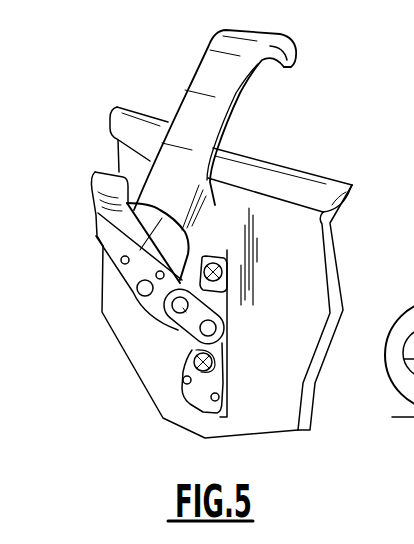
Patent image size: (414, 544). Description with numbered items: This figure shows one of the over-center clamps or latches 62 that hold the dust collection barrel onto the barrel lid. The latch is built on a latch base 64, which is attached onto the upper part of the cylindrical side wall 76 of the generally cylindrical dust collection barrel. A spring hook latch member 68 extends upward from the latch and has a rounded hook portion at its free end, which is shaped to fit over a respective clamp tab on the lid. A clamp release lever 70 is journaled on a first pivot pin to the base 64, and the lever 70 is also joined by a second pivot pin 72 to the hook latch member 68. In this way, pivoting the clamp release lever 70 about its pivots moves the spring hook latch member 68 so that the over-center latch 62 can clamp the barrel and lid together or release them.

The over-center clamp 62 is at (81, 165).
The latch base 64 is at (230, 341).
The spring hook latch member 68 is at (202, 86).
The clamp release lever 70 is at (102, 243).
The second pivot pin 72 is at (190, 318).
The cylindrical side wall 76 is at (325, 273).